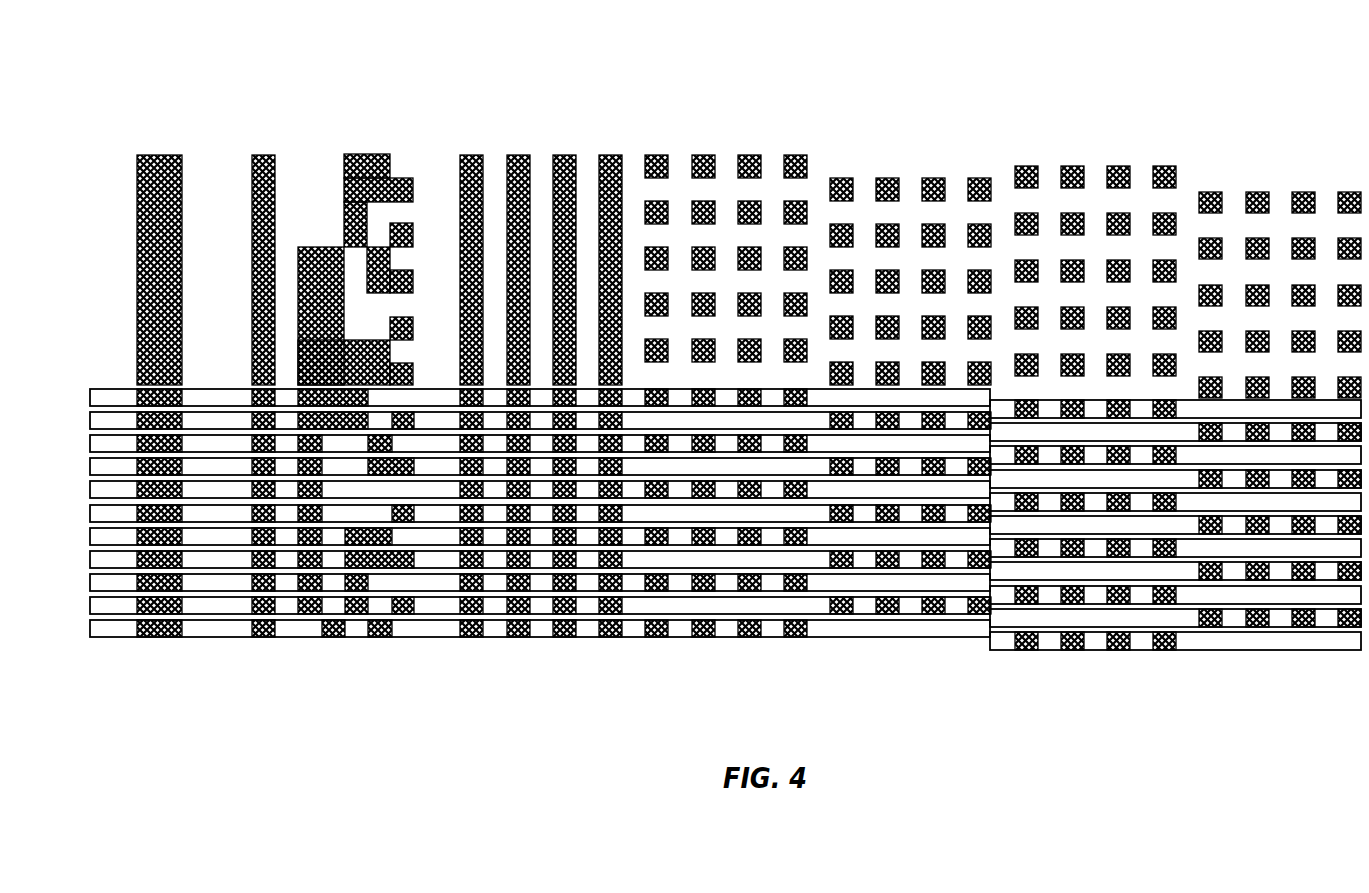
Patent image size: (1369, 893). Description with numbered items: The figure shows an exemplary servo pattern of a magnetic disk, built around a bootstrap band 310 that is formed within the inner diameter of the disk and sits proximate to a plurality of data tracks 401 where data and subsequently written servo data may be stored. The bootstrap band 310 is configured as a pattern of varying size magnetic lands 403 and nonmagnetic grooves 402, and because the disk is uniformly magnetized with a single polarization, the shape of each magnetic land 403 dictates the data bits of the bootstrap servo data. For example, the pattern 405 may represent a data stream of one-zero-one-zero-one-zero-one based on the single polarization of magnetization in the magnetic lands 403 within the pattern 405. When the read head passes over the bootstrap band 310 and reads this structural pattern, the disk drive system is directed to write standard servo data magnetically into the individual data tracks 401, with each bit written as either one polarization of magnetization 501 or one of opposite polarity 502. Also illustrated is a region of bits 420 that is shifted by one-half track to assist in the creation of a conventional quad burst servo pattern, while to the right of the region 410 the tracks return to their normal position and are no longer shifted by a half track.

The bootstrap band 310 is at (88, 155).
The data tracks 401 is at (388, 562).
The nonmagnetic grooves 402 is at (290, 193).
The magnetic lands 403 is at (471, 153).
The pattern 405 is at (820, 142).
The region 410 is at (990, 142).
The region of bits 420 is at (1362, 142).
The one polarization of magnetization 501 is at (510, 608).
The opposite polarity 502 is at (748, 557).